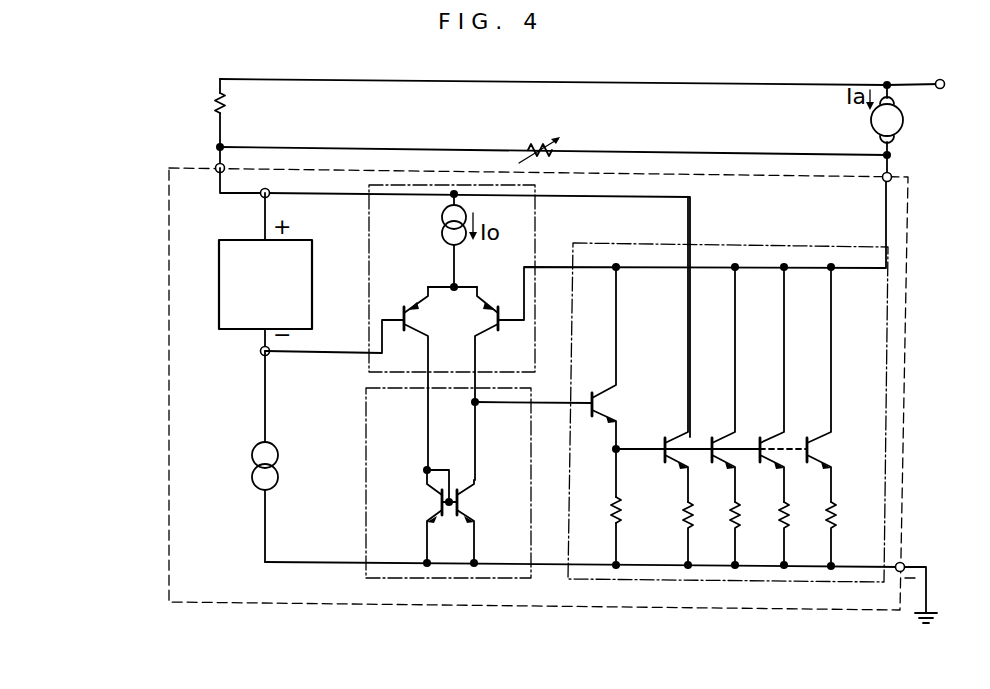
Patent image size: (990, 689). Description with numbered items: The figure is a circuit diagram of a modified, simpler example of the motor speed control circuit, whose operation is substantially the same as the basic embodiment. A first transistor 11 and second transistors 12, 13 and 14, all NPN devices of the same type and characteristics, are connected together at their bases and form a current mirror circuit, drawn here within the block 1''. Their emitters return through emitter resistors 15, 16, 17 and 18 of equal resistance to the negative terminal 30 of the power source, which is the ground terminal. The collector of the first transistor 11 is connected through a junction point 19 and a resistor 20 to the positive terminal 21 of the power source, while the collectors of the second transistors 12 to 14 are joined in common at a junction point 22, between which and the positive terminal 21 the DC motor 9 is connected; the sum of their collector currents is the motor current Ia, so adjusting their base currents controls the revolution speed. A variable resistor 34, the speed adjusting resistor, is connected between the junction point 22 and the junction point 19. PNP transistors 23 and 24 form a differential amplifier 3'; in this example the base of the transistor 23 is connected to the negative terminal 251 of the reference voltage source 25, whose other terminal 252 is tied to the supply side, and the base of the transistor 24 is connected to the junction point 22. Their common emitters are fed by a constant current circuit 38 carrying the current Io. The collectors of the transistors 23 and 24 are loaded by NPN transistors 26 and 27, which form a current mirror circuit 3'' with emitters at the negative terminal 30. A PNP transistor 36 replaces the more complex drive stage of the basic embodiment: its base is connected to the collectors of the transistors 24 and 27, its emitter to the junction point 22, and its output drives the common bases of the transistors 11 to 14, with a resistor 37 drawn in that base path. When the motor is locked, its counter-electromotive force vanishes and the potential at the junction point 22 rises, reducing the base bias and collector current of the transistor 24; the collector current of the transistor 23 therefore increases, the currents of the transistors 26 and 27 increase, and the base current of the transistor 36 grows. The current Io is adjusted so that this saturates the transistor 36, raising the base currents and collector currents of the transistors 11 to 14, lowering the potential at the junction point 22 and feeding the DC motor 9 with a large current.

The DC motor 9 is at (904, 121).
The first transistor 11 is at (675, 432).
The second transistor 12 is at (724, 432).
The second transistor 13 is at (771, 432).
The second transistor 14 is at (828, 455).
The emitter resistor 15 is at (680, 520).
The emitter resistor 16 is at (726, 524).
The emitter resistor 17 is at (776, 524).
The emitter resistor 18 is at (836, 516).
The junction point 19 is at (216, 166).
The resistor 20 is at (218, 101).
The positive terminal 21 is at (945, 82).
The junction point 22 is at (892, 175).
The transistor 23 is at (401, 305).
The transistor 24 is at (492, 300).
The reference voltage source 25 is at (219, 292).
The transistor 26 is at (440, 505).
The transistor 27 is at (462, 505).
The negative terminal 30 is at (905, 562).
The variable resistor 34 is at (545, 144).
The PNP transistor 36 is at (592, 395).
The resistor 37 is at (610, 509).
The constant current circuit 38 is at (441, 225).
The negative terminal 251 is at (259, 352).
The terminal 252 is at (260, 196).
The output circuit block 1'' is at (758, 412).
The differential amplifier 3' is at (435, 278).
The current mirror circuit 3'' is at (448, 514).